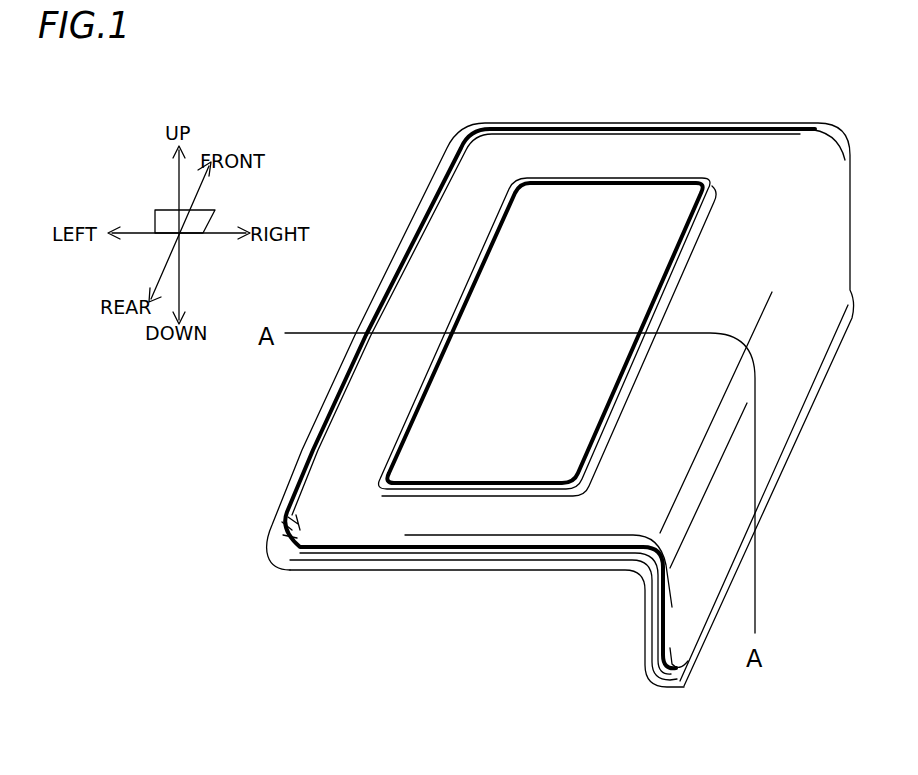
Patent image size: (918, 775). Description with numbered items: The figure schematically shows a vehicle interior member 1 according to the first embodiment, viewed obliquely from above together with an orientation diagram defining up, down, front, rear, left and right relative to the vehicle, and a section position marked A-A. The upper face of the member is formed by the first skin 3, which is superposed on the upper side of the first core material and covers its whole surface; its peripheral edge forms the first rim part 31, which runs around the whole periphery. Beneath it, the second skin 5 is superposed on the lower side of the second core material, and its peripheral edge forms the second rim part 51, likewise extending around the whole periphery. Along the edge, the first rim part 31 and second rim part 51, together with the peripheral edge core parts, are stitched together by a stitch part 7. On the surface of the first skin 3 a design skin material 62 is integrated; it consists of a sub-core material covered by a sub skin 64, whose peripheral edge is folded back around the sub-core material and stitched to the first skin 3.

The vehicle interior member 1 is at (413, 149).
The first skin 3 is at (672, 142).
The second skin 5 is at (500, 568).
The stitch part 7 is at (720, 126).
The first rim part 31 is at (332, 553).
The second rim part 51 is at (288, 566).
The design skin material 62 is at (577, 215).
The sub skin 64 is at (685, 243).